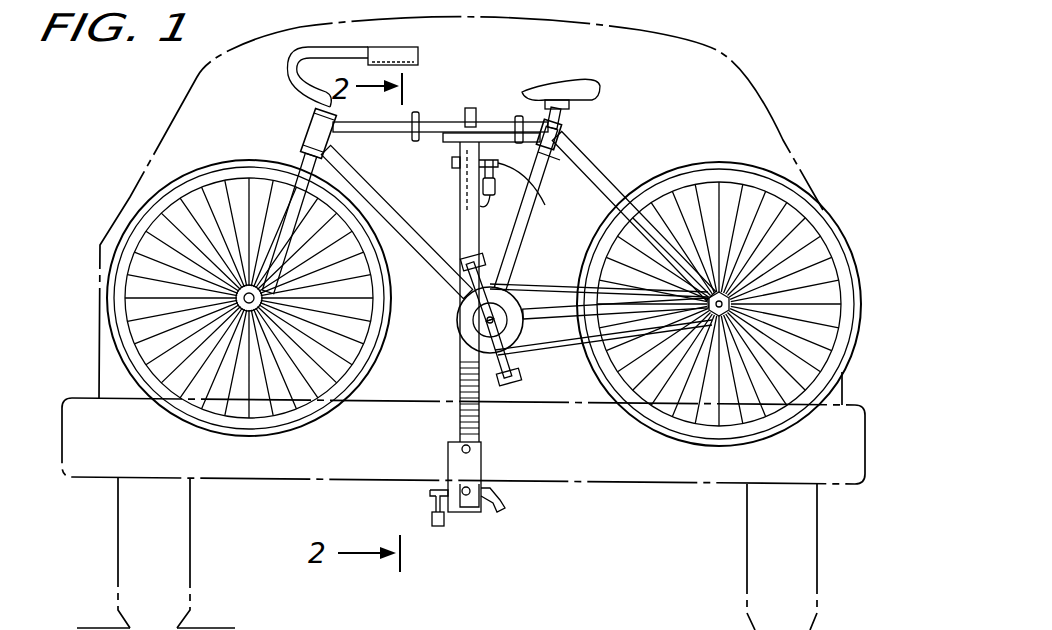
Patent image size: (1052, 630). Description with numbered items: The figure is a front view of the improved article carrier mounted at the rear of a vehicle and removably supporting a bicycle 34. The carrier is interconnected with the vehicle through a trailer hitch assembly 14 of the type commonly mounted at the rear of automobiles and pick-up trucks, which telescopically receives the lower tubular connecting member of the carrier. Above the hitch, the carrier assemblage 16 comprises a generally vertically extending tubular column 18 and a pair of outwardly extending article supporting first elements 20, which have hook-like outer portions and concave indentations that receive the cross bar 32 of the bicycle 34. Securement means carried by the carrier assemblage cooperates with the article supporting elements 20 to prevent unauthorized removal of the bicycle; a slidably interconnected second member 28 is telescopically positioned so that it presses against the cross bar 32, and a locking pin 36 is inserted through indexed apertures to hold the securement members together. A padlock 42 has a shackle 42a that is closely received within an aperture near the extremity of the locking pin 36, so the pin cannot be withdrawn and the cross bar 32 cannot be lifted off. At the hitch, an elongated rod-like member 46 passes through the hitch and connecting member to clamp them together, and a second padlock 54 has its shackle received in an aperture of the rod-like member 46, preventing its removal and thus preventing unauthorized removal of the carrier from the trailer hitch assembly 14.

The trailer hitch assembly 14 is at (442, 457).
The carrier assemblage 16 is at (452, 181).
The tubular column 18 is at (480, 419).
The article supporting first elements 20 is at (416, 112).
The second member of securement means 28 is at (470, 107).
The cross bar 32 is at (375, 133).
The bicycle 34 is at (598, 150).
The locking pin 36 is at (540, 160).
The padlock 42 is at (480, 206).
The shackle 42a is at (528, 185).
The rod-like member 46 is at (505, 510).
The second padlock 54 is at (432, 518).